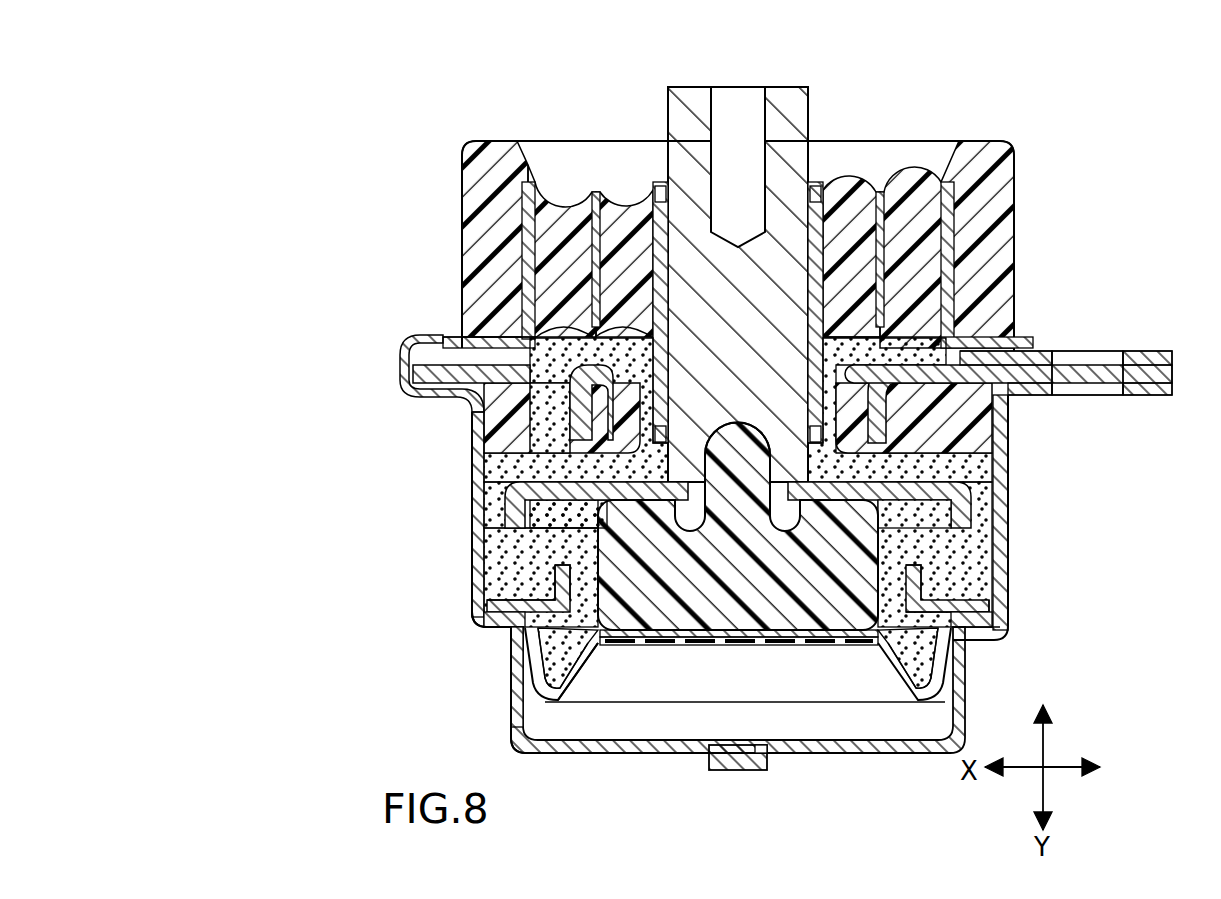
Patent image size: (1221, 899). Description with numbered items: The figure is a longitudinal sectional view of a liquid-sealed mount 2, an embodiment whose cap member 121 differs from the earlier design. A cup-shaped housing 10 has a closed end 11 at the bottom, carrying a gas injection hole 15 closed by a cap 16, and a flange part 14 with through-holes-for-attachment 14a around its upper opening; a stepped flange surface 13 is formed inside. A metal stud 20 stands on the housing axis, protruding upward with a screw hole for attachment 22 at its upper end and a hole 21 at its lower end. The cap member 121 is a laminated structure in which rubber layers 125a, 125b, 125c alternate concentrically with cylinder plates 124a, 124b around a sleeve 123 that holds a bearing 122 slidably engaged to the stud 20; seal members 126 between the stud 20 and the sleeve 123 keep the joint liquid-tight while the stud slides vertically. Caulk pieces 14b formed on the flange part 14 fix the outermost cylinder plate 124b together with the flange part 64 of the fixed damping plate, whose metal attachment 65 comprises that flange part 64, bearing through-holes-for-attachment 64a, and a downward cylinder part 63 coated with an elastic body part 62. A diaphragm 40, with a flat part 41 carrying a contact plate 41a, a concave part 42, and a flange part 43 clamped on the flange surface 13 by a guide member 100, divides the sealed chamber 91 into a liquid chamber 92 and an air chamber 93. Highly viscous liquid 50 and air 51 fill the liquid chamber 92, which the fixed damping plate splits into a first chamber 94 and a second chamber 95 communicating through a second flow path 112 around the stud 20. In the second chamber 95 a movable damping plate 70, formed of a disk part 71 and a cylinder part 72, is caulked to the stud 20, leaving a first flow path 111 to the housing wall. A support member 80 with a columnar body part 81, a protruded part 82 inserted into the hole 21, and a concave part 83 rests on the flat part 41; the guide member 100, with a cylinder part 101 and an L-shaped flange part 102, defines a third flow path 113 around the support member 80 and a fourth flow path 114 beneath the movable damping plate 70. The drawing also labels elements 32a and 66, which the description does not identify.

The liquid-sealed mount 2 is at (1022, 180).
The cup-shaped housing 10 is at (478, 468).
The closed end 11 is at (683, 755).
The flange surface 13 is at (517, 640).
The flange part 14 is at (425, 398).
The through-holes-for-attachment 14a is at (1100, 385).
The caulk pieces 14b is at (403, 350).
The gas injection hole 15 is at (768, 758).
The cap 16 is at (738, 772).
The stud 20 is at (692, 100).
The hole 21 is at (900, 338).
The screw hole for attachment 22 is at (745, 100).
The bolt hole 32a is at (1085, 355).
The diaphragm 40 is at (842, 648).
The flat part 41 is at (652, 648).
The contact plate 41a is at (640, 650).
The concave part 42 is at (560, 692).
The flange part 43 is at (500, 618).
The highly viscous liquid 50 is at (900, 562).
The air 51 is at (596, 205).
The elastic body part 62 is at (920, 404).
The cylinder part 63 is at (565, 330).
The flange part 64 is at (495, 343).
The through-holes-for-attachment 64a is at (1092, 378).
The attachment 65 is at (365, 285).
The side elastic portion 66 is at (500, 432).
The movable damping plate 70 is at (1078, 452).
The disk part 71 is at (962, 490).
The cylinder part 72 is at (950, 518).
The support member 80 is at (1066, 560).
The body part 81 is at (988, 632).
The protruded part 82 is at (950, 582).
The concave part 83 is at (988, 602).
The sealed chamber 91 is at (264, 455).
The liquid chamber 92 is at (308, 442).
The air chamber 93 is at (560, 720).
The first chamber 94 is at (568, 408).
The second chamber 95 is at (560, 520).
The guide member 100 is at (370, 550).
The cylinder part 101 is at (556, 582).
The flange part 102 is at (545, 598).
The first flow path 111 is at (495, 500).
The second flow path 112 is at (890, 420).
The third flow path 113 is at (586, 650).
The fourth flow path 114 is at (532, 548).
The cap member 121 is at (1016, 214).
The bearing 122 is at (956, 262).
The sleeve 123 is at (824, 188).
The cylinder plate 124a is at (892, 197).
The cylinder plate 124b is at (950, 185).
The rubber layer 125a is at (630, 212).
The rubber layer 125b is at (556, 214).
The rubber layer 125c is at (495, 152).
The seal members 126 is at (814, 188).